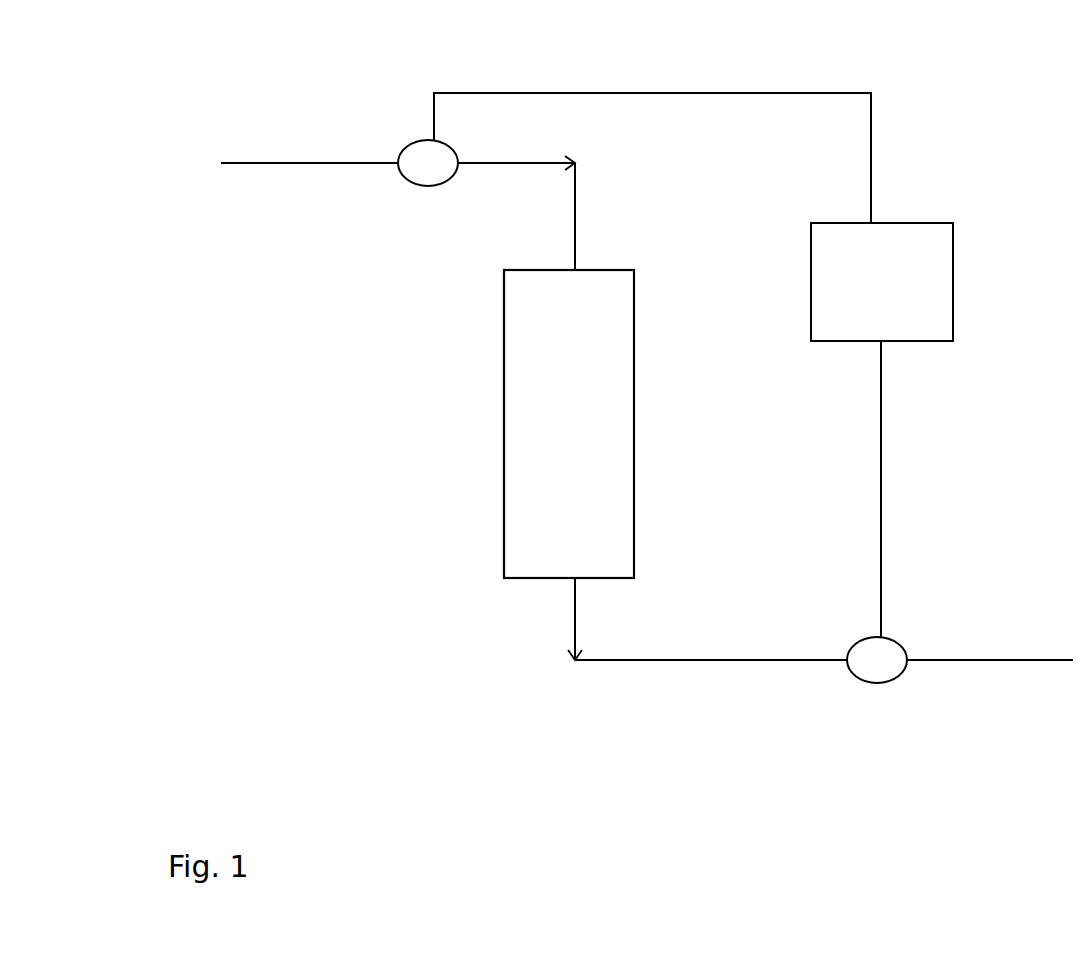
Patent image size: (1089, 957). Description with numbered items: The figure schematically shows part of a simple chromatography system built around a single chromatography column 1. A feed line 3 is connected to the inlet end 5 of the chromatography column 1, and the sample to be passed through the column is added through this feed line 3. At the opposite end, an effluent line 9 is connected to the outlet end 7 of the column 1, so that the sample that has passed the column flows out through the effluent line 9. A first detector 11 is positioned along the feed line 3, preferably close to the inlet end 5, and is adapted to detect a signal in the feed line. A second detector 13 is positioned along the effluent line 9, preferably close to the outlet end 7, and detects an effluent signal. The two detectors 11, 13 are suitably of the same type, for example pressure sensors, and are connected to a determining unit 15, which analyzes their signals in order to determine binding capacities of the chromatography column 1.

The chromatography column 1 is at (504, 412).
The feed line 3 is at (281, 163).
The inlet end 5 is at (537, 270).
The outlet end 7 is at (512, 578).
The effluent line 9 is at (598, 661).
The first detector 11 is at (423, 141).
The second detector 13 is at (878, 683).
The determining unit 15 is at (953, 268).